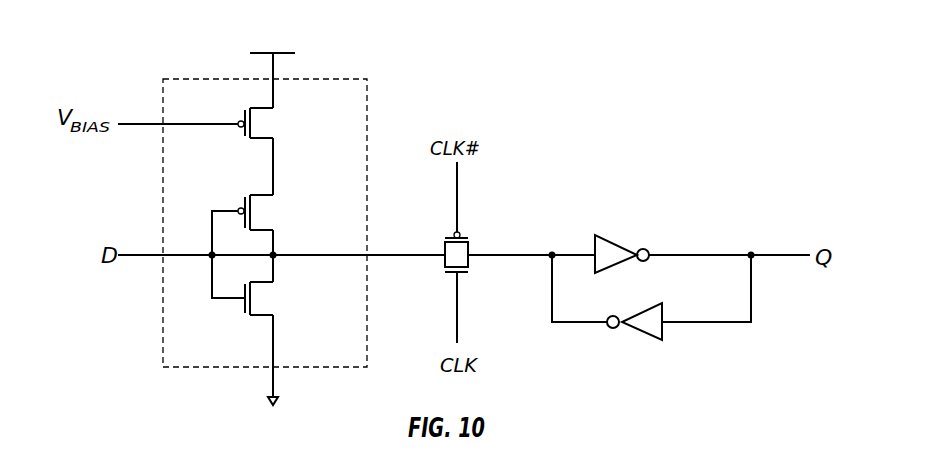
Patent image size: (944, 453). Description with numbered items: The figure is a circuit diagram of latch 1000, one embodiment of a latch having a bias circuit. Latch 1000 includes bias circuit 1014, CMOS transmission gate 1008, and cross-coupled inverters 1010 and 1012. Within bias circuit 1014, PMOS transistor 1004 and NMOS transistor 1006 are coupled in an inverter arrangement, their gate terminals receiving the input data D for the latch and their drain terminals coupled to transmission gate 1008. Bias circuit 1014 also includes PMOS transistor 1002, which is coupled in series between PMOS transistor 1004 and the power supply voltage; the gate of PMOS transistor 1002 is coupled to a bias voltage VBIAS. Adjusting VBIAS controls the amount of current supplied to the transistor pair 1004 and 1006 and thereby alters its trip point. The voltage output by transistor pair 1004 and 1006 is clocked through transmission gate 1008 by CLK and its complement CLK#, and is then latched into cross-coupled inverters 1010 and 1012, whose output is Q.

The latch 1000 is at (732, 66).
The PMOS transistor 1002 is at (297, 134).
The PMOS transistor 1004 is at (297, 220).
The NMOS transistor 1006 is at (300, 309).
The CMOS transmission gate 1008 is at (494, 237).
The inverter 1010 is at (643, 238).
The inverter 1012 is at (613, 339).
The bias circuit 1014 is at (279, 206).